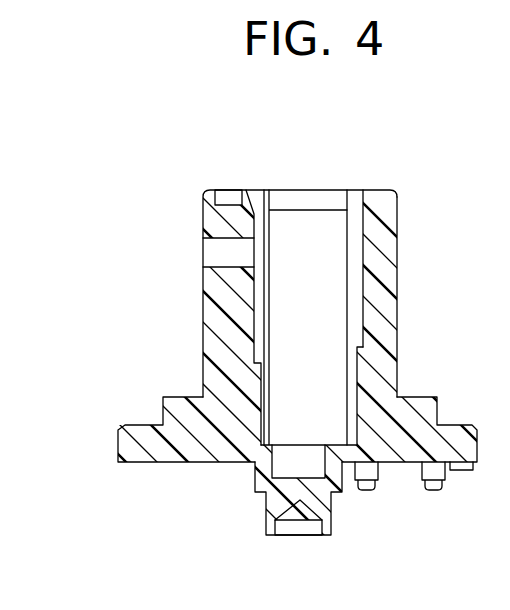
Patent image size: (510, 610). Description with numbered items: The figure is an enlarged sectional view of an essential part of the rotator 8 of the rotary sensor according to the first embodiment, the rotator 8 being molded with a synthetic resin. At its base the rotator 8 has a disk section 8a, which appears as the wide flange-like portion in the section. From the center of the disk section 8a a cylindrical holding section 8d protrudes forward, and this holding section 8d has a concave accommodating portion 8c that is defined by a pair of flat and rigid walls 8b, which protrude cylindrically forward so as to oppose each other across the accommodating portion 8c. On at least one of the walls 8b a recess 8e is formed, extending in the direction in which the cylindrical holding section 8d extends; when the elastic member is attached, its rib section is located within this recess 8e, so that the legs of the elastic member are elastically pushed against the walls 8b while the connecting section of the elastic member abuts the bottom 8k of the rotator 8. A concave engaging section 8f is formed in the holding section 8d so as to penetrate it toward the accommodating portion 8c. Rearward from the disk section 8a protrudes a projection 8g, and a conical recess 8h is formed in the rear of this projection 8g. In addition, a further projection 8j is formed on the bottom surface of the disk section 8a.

The rotator 8 is at (402, 203).
The disk section 8a is at (152, 442).
The walls 8b is at (266, 260).
The accommodating portion 8c is at (283, 326).
The holding section 8d is at (398, 253).
The recess 8e is at (357, 318).
The engaging section 8f is at (213, 250).
The projection 8g is at (277, 497).
The conical recess 8h is at (297, 520).
The projection 8j is at (435, 492).
The bottom 8k is at (345, 455).